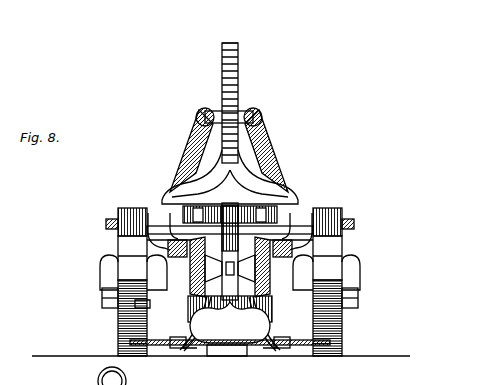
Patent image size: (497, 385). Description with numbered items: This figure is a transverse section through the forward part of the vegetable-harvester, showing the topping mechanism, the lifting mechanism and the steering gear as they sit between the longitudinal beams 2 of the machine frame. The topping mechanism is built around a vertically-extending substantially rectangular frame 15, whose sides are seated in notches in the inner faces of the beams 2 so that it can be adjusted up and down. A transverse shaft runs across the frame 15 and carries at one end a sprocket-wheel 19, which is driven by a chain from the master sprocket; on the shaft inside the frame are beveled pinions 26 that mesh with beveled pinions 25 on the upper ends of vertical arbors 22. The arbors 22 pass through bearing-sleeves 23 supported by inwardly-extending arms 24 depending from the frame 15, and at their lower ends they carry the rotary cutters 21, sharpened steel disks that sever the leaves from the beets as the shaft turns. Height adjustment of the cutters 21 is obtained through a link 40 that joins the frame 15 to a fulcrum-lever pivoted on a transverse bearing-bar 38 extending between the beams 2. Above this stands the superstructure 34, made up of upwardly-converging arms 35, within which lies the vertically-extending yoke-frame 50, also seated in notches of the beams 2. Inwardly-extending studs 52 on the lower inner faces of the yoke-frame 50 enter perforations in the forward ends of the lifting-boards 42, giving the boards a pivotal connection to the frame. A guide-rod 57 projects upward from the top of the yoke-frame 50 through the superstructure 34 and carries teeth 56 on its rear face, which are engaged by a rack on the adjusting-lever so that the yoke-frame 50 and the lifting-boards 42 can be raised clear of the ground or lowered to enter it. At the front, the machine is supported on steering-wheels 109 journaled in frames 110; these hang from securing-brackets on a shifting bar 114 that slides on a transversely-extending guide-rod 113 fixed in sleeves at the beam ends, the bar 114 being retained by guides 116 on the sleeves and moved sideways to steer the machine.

The guide-rod 57 is at (227, 52).
The teeth 56 is at (240, 78).
The superstructure 34 is at (240, 112).
The upwardly-converging arms 35 is at (183, 157).
The yoke-frame 50 is at (266, 173).
The transverse bearing-bar 38 is at (203, 216).
The guides 116 is at (258, 214).
The shifting bar 114 is at (133, 214).
The guide-rod 113 is at (112, 222).
The longitudinal beams 2 is at (118, 240).
The steering-wheels 109 is at (132, 252).
The frames 110 is at (110, 275).
The sprocket-wheel 19 is at (104, 290).
The bearing-sleeves 23 is at (172, 317).
The link 40 is at (240, 251).
The beveled pinions 26 is at (368, 262).
The lifting-boards 42 is at (189, 351).
The frame 15 is at (210, 333).
The inwardly-extending arms 24 is at (205, 336).
The beveled pinions 25 is at (103, 312).
The studs 52 is at (178, 347).
The arbors 22 is at (185, 349).
The rotary cutters 21 is at (227, 353).